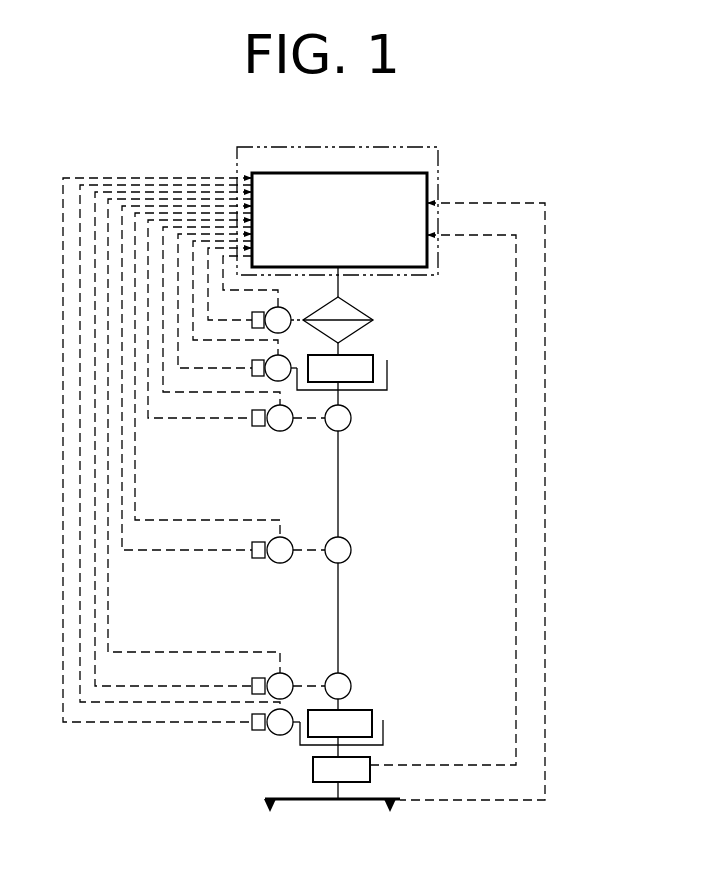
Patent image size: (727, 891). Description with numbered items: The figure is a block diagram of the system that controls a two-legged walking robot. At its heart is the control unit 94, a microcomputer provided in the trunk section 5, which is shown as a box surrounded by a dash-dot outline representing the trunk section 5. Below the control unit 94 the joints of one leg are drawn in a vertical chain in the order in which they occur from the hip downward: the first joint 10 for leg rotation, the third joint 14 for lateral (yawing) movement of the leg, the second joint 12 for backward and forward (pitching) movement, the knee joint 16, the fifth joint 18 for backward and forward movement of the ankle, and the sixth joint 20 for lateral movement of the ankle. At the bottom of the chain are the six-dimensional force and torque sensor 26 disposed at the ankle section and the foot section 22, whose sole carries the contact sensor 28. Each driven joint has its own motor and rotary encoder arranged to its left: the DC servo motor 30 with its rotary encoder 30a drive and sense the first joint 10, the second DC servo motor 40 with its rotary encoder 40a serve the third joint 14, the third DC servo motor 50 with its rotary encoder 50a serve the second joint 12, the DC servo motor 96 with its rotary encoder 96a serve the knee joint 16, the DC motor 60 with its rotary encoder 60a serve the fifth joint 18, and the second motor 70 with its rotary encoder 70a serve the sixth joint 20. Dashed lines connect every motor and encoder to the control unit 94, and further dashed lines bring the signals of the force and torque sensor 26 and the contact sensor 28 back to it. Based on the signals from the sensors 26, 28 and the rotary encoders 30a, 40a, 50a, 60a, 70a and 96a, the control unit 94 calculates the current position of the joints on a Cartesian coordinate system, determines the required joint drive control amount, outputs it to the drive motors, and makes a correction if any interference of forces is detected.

The trunk section 5 is at (440, 152).
The control unit 94 is at (322, 173).
The first joint 10 is at (375, 320).
The third joint 14 is at (373, 358).
The second joint 12 is at (349, 426).
The knee joint 16 is at (351, 546).
The fifth joint 18 is at (351, 684).
The sixth joint 20 is at (365, 717).
The six-dimensional force and torque sensor 26 is at (370, 775).
The foot section 22 is at (378, 806).
The contact sensor 28 is at (268, 808).
The DC servo motor 30 is at (285, 308).
The rotary encoder 30a is at (256, 312).
The second DC servo motor 40 is at (284, 356).
The second rotary encoder 40a is at (252, 362).
The third DC servo motor 50 is at (291, 427).
The rotary encoder 50a is at (252, 412).
The DC servo motor 96 is at (288, 538).
The rotary encoder 96a is at (252, 545).
The DC motor 60 is at (290, 674).
The rotary encoder 60a is at (252, 680).
The second motor 70 is at (280, 736).
The rotary encoder 70a is at (252, 732).